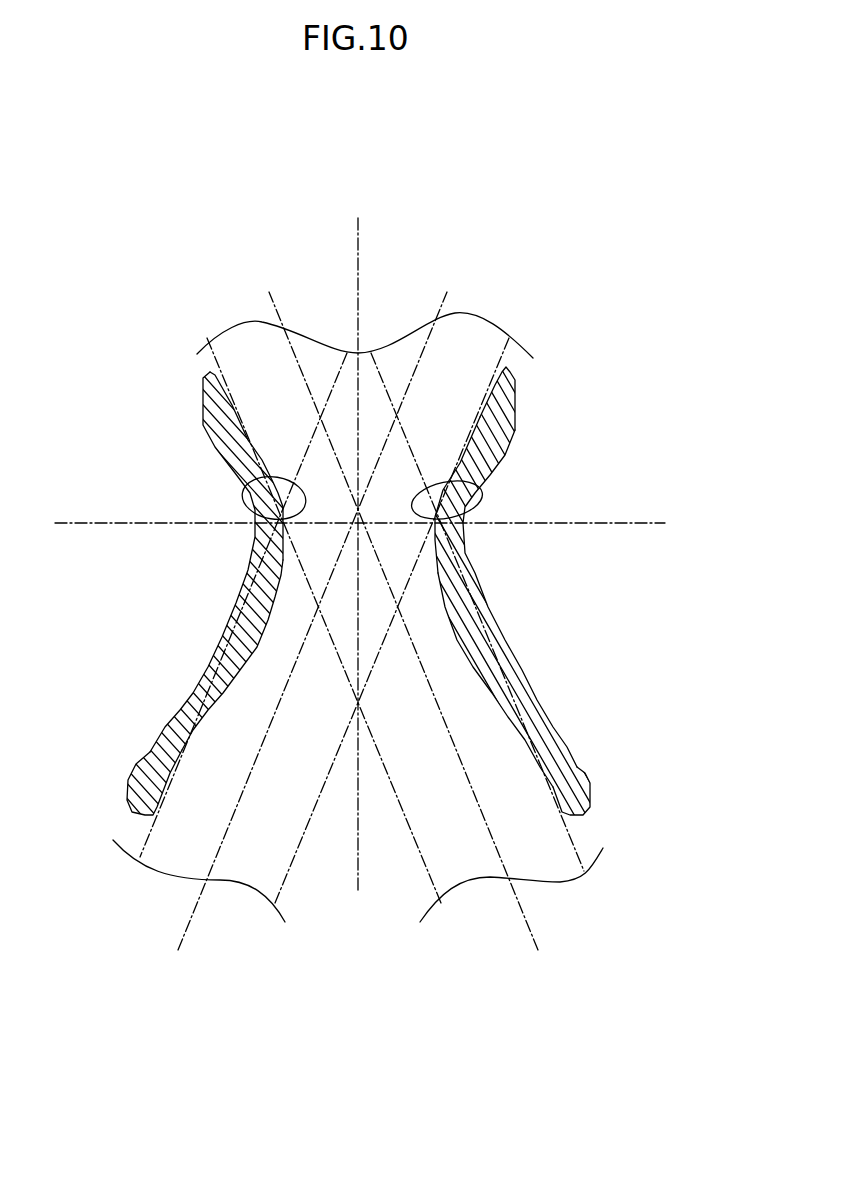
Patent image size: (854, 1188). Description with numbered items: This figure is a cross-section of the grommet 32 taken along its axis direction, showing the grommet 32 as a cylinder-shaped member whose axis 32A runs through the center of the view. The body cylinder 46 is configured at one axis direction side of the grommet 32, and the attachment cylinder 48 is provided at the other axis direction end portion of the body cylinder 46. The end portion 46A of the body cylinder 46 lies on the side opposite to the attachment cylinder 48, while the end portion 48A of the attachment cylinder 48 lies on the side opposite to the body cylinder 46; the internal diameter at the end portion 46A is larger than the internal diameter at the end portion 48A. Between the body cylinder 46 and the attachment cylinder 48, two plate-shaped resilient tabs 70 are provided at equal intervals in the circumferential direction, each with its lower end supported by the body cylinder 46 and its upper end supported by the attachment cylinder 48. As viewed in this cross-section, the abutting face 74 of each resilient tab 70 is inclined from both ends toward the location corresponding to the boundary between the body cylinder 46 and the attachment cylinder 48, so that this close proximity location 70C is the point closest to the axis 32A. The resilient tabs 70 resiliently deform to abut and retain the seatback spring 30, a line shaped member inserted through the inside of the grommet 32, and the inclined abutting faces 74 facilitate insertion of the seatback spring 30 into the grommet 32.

The axis 32A is at (360, 282).
The grommet 32 is at (582, 354).
The end portion 48A is at (513, 365).
The attachment cylinder 48 is at (579, 396).
The end portion 46A is at (568, 812).
The body cylinder 46 is at (648, 801).
The resilient tab 70 is at (274, 626).
The close proximity location 70C is at (244, 490).
The abutting face 74 is at (256, 651).
The seatback spring 30 is at (296, 861).